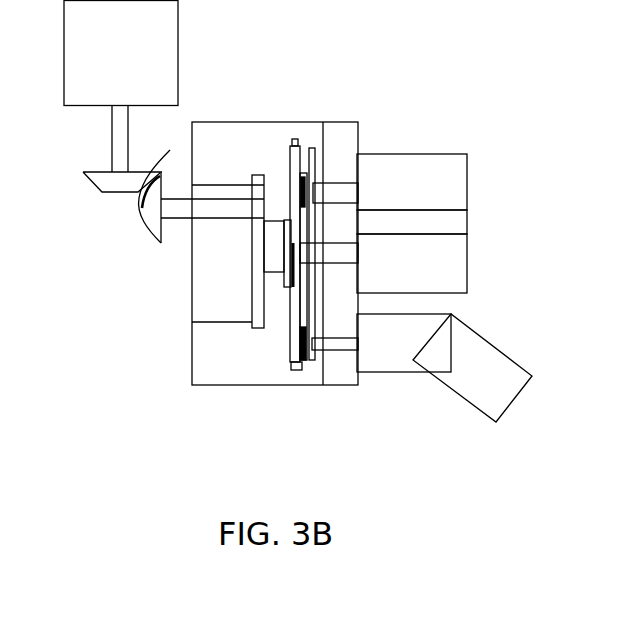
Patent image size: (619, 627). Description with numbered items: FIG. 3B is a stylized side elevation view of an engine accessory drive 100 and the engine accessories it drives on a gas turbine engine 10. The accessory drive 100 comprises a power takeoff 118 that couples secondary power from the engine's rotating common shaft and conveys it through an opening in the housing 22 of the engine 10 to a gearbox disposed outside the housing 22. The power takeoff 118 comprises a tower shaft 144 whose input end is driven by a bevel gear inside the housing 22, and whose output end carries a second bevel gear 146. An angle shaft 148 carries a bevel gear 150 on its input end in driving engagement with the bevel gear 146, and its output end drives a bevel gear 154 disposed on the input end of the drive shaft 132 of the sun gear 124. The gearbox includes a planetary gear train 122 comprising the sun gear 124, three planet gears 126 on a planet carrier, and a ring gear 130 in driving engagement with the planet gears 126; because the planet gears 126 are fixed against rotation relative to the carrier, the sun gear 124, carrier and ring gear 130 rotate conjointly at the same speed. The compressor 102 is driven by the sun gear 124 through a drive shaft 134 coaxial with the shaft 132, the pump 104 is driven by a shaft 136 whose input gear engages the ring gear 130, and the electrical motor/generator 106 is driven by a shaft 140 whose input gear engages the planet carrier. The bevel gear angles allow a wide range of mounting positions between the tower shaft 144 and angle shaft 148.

The gas turbine engine 10 is at (185, 50).
The housing 22 is at (72, 50).
The engine accessory drive 100 is at (198, 386).
The compressor 102 is at (467, 253).
The pump 104 is at (480, 347).
The electrical motor/generator 106 is at (467, 190).
The power takeoff 118 is at (154, 213).
The planetary gear train 122 is at (330, 245).
The sun gear 124 is at (285, 287).
The planet gears 126 is at (0, 410).
The ring gear 130 is at (295, 368).
The drive shaft 132 is at (277, 240).
The drive shaft 134 is at (340, 255).
The shaft 136 is at (335, 343).
The shaft 140 is at (343, 195).
The tower shaft 144 is at (118, 145).
The second bevel gear 146 is at (118, 190).
The angle shaft 148 is at (175, 213).
The bevel gear 150 is at (162, 183).
The bevel gear 154 is at (253, 292).